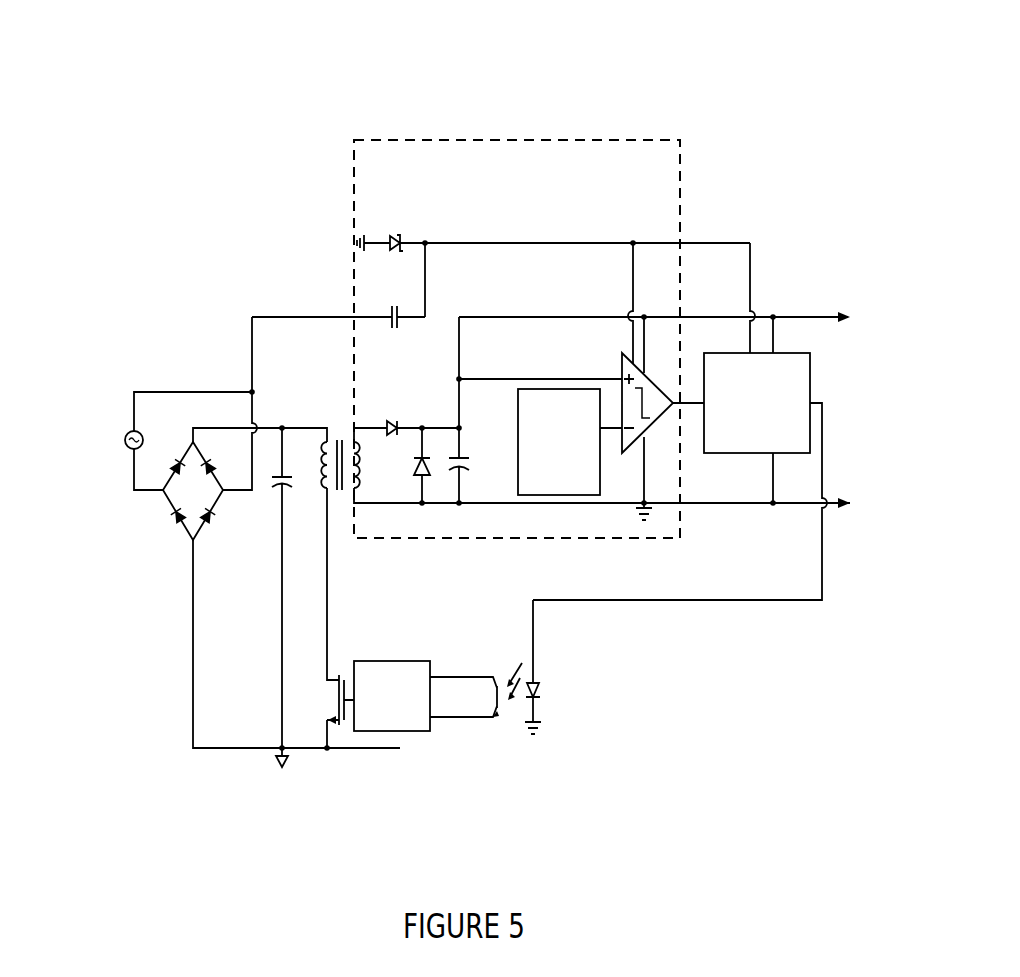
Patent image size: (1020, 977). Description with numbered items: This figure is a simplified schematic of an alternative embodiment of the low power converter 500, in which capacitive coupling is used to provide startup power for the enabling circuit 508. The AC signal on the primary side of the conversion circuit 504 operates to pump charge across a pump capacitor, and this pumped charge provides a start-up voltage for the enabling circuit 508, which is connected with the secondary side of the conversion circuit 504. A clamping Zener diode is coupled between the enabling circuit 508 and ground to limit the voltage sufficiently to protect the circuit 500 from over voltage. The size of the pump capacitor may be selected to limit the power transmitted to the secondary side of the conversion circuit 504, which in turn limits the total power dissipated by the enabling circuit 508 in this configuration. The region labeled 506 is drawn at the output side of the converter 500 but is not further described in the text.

The low power converter 500 is at (611, 745).
The conversion circuit 504 is at (268, 258).
The output control stage 506 is at (804, 374).
The enabling circuit 508 is at (528, 130).